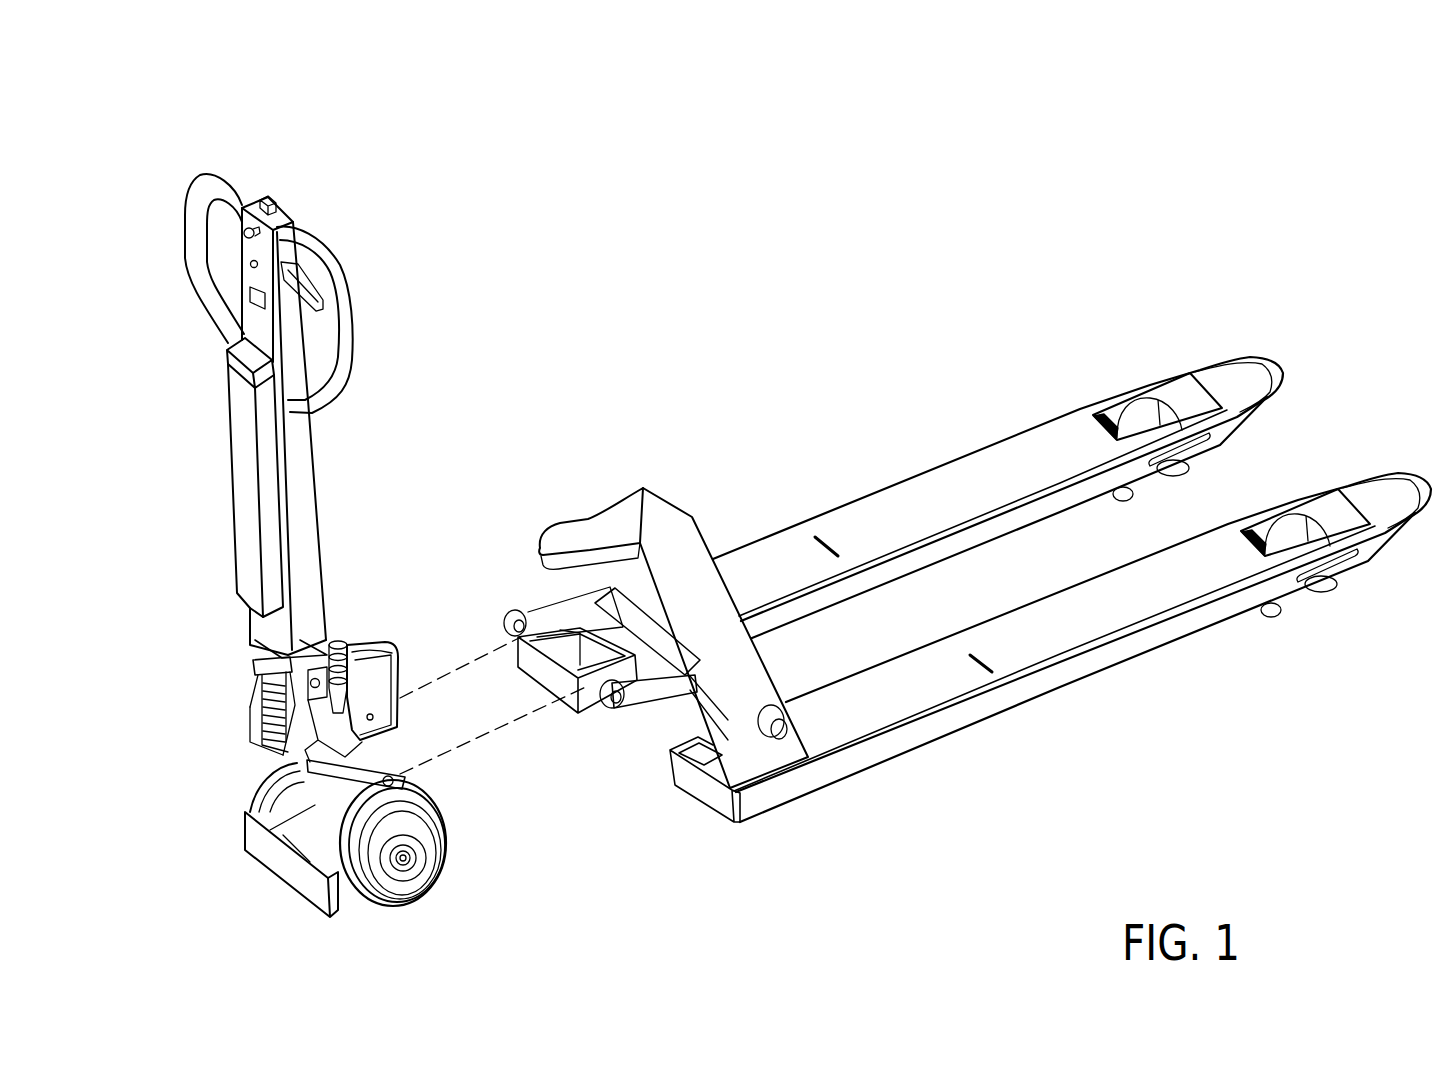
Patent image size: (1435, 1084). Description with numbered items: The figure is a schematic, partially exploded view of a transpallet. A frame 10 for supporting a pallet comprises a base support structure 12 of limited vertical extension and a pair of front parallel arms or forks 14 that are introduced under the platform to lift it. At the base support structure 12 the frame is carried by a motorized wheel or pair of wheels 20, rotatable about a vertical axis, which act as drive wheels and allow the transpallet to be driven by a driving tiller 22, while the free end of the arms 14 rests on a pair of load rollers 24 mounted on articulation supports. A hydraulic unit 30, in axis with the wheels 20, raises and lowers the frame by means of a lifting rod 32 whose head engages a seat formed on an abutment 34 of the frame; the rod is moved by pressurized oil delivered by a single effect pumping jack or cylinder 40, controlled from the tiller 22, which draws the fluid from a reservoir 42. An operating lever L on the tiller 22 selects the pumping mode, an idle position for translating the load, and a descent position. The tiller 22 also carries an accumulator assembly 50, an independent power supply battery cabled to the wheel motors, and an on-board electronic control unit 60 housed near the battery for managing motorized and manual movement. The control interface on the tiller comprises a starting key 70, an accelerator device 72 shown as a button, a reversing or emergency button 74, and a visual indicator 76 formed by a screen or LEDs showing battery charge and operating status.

The frame 10 is at (693, 325).
The base support structure 12 is at (966, 421).
The front parallel arms or forks 14 is at (908, 522).
The motorized wheel 20 is at (253, 787).
The driving tiller 22 is at (382, 236).
The load rollers 24 is at (1140, 413).
The hydraulic unit 30 is at (218, 664).
The lifting rod 32 is at (338, 640).
The abutment 34 is at (533, 573).
The pumping jack or cylinder 40 is at (262, 708).
The reservoir 42 is at (393, 708).
The accumulator assembly 50 is at (247, 527).
The on-board electronic control unit 60 is at (250, 357).
The starting key 70 is at (250, 263).
The accelerator device 72 is at (268, 200).
The reversing button 74 is at (246, 232).
The visual indicator 76 is at (248, 294).
The operating lever L is at (322, 288).